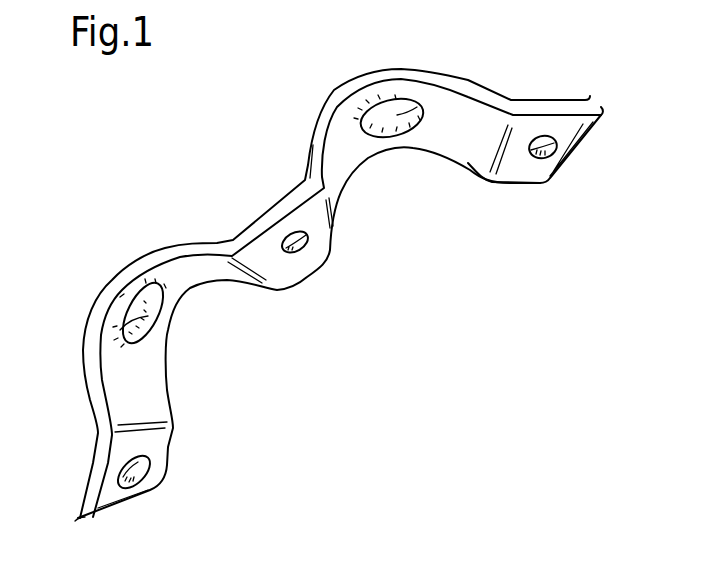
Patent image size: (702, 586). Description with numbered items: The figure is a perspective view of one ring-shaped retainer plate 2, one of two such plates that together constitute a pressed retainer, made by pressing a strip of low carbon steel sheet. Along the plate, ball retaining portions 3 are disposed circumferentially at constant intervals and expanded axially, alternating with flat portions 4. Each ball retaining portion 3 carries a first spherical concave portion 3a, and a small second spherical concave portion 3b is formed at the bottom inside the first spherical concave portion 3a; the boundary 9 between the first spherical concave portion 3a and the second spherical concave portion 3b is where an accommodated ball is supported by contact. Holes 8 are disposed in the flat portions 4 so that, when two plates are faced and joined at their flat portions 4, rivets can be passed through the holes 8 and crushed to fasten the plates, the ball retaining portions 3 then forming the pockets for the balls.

The ring-shaped retainer plate 2 is at (227, 132).
The ball retaining portion 3 is at (322, 110).
The first spherical concave portion 3a is at (133, 382).
The second spherical concave portion 3b is at (120, 330).
The flat portion 4 is at (268, 222).
The hole 8 is at (297, 245).
The boundary 9 is at (165, 320).